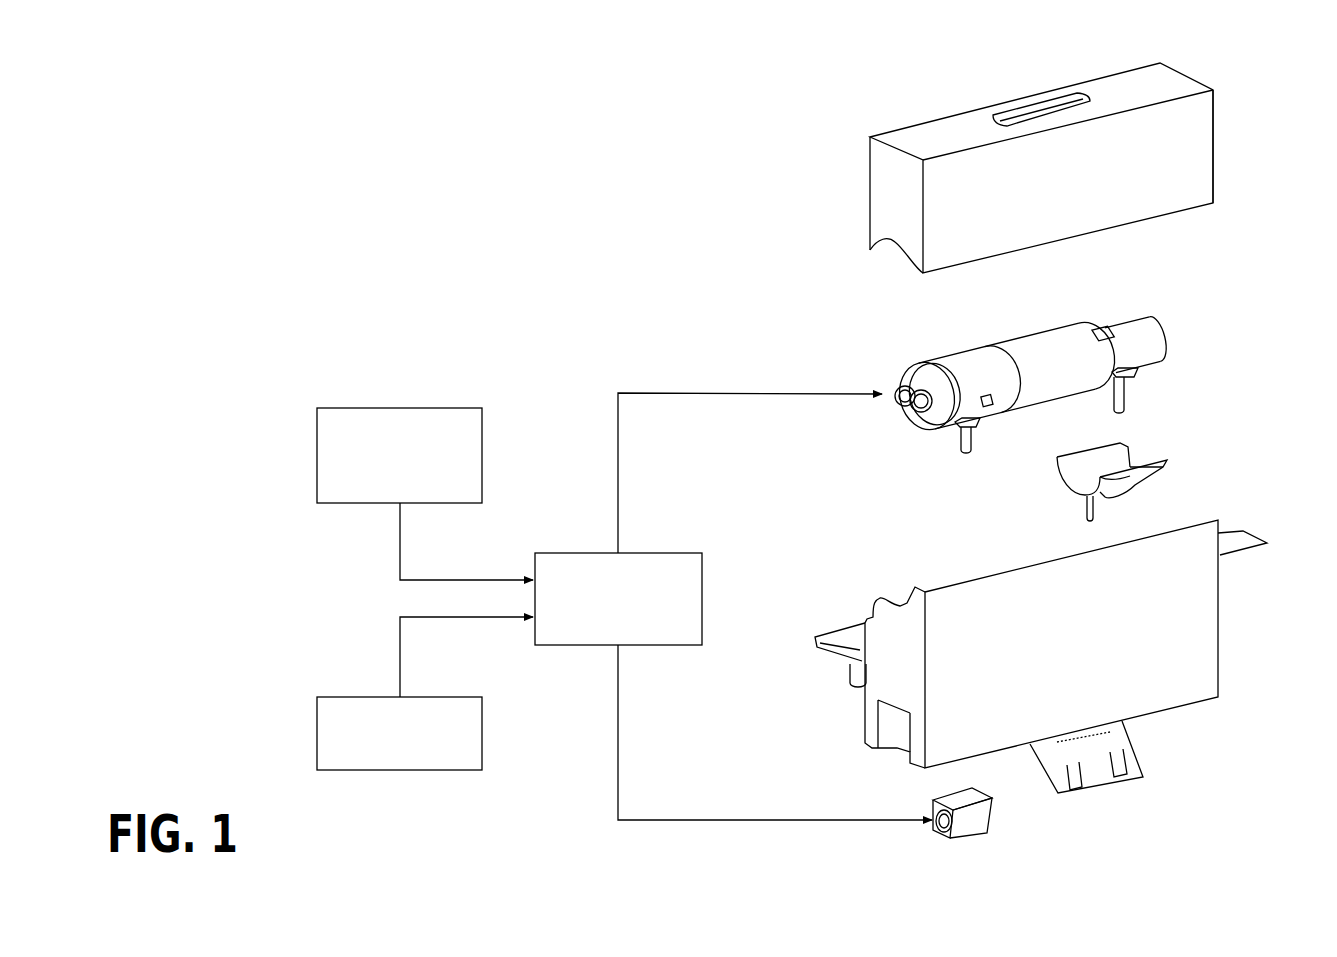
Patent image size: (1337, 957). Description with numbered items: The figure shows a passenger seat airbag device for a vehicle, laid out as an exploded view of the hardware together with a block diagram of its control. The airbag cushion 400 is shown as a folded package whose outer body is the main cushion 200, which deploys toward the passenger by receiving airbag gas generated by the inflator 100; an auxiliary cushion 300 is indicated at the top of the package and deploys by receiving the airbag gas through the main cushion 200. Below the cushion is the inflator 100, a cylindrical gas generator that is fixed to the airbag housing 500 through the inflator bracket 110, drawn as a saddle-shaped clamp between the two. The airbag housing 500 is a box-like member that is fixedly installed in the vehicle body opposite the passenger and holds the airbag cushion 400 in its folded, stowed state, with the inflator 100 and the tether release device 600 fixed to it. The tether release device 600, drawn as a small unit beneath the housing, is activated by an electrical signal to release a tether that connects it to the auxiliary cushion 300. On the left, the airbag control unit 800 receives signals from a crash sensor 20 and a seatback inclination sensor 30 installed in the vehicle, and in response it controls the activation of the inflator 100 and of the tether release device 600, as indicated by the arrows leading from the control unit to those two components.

The crash sensor 20 is at (400, 770).
The seatback inclination sensor 30 is at (398, 407).
The inflator 100 is at (1153, 343).
The inflator bracket 110 is at (1168, 468).
The main cushion 200 is at (1168, 87).
The auxiliary cushion 300 is at (1042, 103).
The airbag cushion 400 is at (1222, 177).
The airbag housing 500 is at (1200, 630).
The tether release device 600 is at (972, 824).
The airbag control unit 800 is at (572, 552).